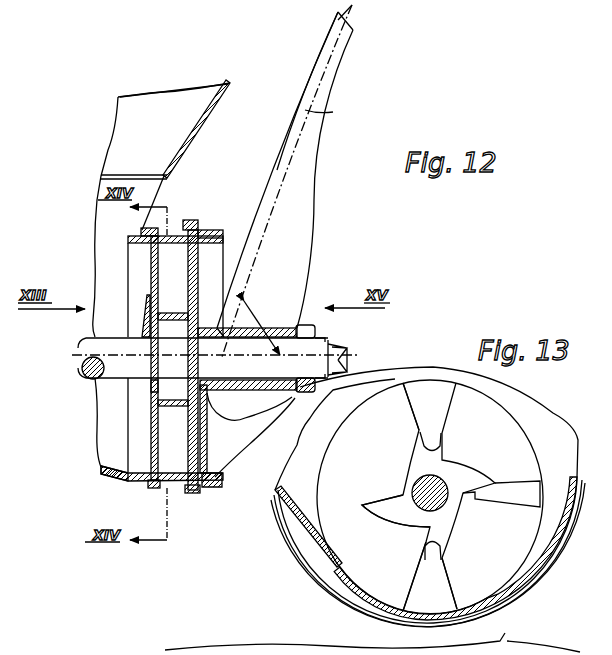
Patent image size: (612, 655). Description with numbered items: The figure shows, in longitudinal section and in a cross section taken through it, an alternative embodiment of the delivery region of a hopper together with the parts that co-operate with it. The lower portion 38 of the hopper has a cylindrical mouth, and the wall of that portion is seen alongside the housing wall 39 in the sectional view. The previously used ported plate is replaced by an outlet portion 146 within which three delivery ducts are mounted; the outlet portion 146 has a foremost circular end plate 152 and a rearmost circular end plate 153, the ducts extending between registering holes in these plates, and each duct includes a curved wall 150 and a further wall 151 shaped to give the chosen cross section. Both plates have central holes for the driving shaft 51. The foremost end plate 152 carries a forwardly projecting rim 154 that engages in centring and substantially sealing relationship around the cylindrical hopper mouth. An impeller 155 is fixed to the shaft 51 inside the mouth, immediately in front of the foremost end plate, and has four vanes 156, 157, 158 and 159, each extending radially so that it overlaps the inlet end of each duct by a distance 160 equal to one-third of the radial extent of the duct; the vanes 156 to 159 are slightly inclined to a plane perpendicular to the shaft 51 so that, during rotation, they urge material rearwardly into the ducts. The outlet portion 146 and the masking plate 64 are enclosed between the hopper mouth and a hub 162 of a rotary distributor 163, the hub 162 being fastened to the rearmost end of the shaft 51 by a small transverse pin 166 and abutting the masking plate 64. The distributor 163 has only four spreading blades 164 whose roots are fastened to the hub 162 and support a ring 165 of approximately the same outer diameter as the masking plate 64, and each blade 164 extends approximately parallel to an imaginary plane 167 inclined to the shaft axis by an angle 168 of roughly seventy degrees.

In FIG. 12, the lower portion of the hopper 38 is at (97, 233).
In FIG. 13, the lower portion of the hopper 38 is at (553, 423).
In FIG. 12, the housing wall 39 is at (150, 98).
In FIG. 12, the driving shaft 51 is at (82, 370).
In FIG. 13, the driving shaft 51 is at (415, 488).
In FIG. 12, the masking plate 64 is at (189, 228).
In FIG. 12, the outlet portion 146 is at (178, 487).
In FIG. 12, the curved wall 150 is at (167, 228).
In FIG. 12, the wall 151 is at (173, 404).
In FIG. 12, the foremost end plate 152 is at (158, 388).
In FIG. 12, the rearmost end plate 153 is at (195, 364).
In FIG. 12, the forwardly projecting rim 154 is at (150, 482).
In FIG. 13, the impeller 155 is at (477, 443).
In FIG. 13, the vane 156 is at (412, 443).
In FIG. 13, the vane 157 is at (390, 517).
In FIG. 13, the vane 158 is at (448, 541).
In FIG. 13, the vane 159 is at (474, 478).
In FIG. 12, the overlap distance 160 is at (140, 313).
In FIG. 12, the hub 162 is at (277, 328).
In FIG. 12, the rotary distributor 163 is at (360, 197).
In FIG. 12, the spreading blade 164 is at (318, 45).
In FIG. 12, the ring 165 is at (220, 230).
In FIG. 12, the transverse pin 166 is at (308, 325).
In FIG. 12, the imaginary plane 167 is at (330, 114).
In FIG. 12, the offset 168 is at (257, 301).